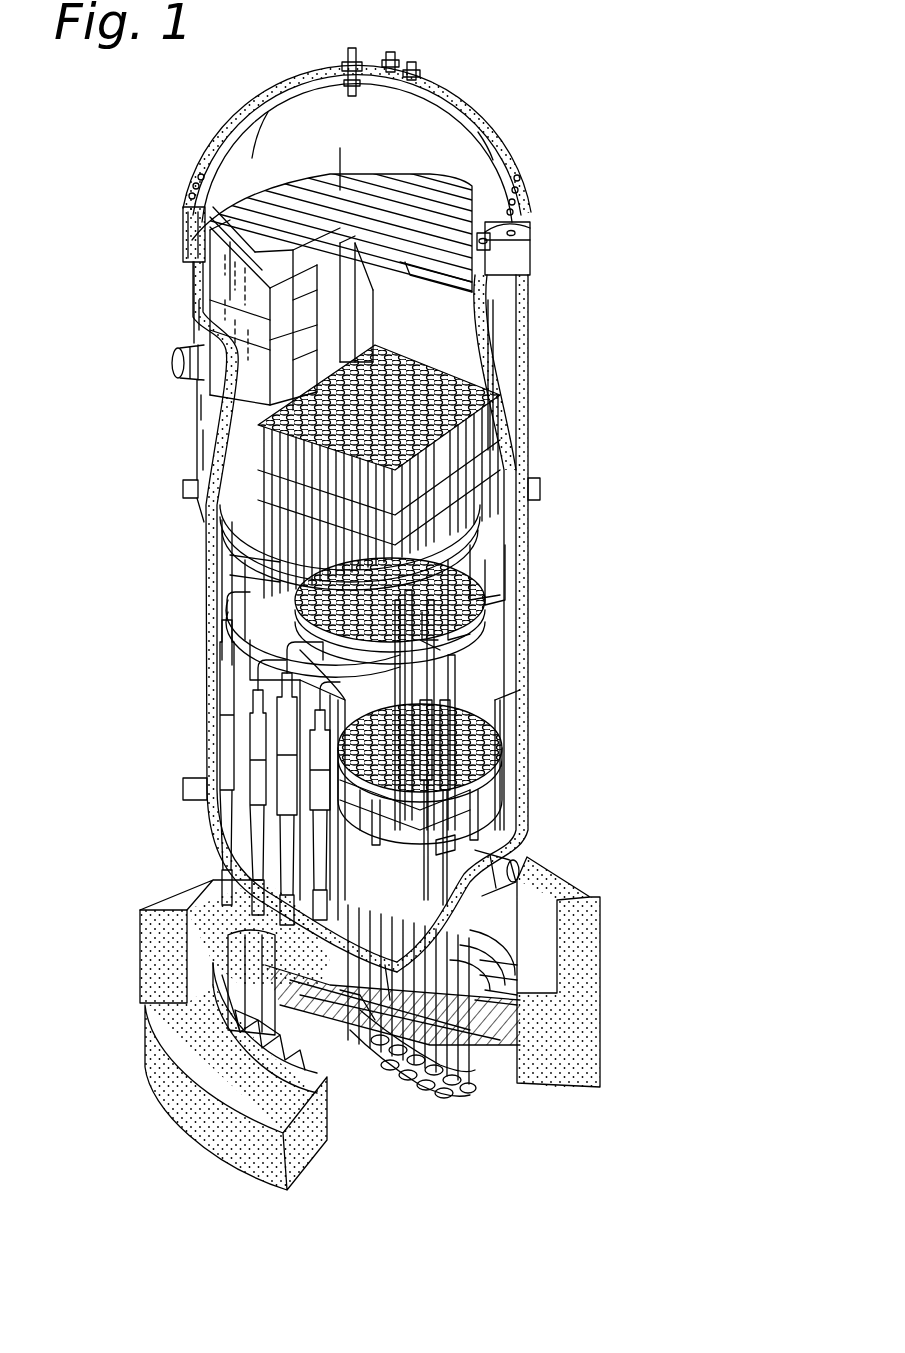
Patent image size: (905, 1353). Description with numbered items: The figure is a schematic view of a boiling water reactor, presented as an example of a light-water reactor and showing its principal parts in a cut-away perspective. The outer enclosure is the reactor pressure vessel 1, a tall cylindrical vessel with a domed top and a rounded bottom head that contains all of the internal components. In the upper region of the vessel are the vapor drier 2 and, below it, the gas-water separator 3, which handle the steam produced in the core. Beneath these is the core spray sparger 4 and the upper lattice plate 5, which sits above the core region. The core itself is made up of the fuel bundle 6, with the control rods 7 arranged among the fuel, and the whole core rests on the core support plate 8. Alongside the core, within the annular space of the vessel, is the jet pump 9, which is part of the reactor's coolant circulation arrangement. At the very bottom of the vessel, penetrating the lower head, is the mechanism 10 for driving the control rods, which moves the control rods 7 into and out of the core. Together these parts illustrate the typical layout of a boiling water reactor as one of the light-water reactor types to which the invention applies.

The reactor pressure vessel 1 is at (322, 58).
The vapor drier 2 is at (468, 333).
The gas-water separator 3 is at (455, 487).
The core spray sparger 4 is at (450, 618).
The upper lattice plate 5 is at (465, 585).
The fuel bundle 6 is at (405, 680).
The control rods 7 is at (445, 715).
The core support plate 8 is at (497, 778).
The jet pump 9 is at (212, 808).
The mechanism for driving control rods 10 is at (393, 1077).